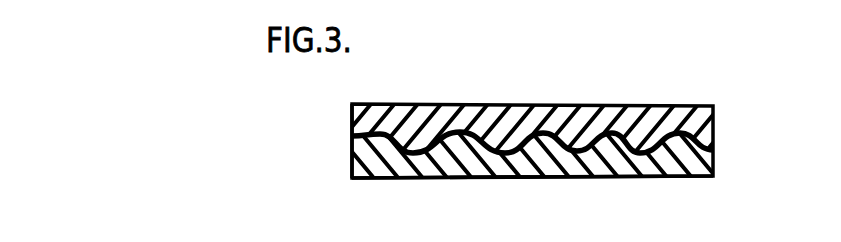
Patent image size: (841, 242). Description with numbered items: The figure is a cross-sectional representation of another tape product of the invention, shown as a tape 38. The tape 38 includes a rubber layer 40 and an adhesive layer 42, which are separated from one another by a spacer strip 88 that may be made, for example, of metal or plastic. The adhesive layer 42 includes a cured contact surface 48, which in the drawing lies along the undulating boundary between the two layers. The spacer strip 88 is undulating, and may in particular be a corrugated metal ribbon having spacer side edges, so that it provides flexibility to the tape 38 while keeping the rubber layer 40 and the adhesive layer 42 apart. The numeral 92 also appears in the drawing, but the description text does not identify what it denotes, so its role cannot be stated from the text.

The tape 38 is at (724, 164).
The rubber layer 40 is at (597, 117).
The adhesive layer 42 is at (515, 178).
The cured contact surface 48 is at (398, 134).
The spacer strip 88 is at (352, 129).
The lower layer 92 is at (393, 178).